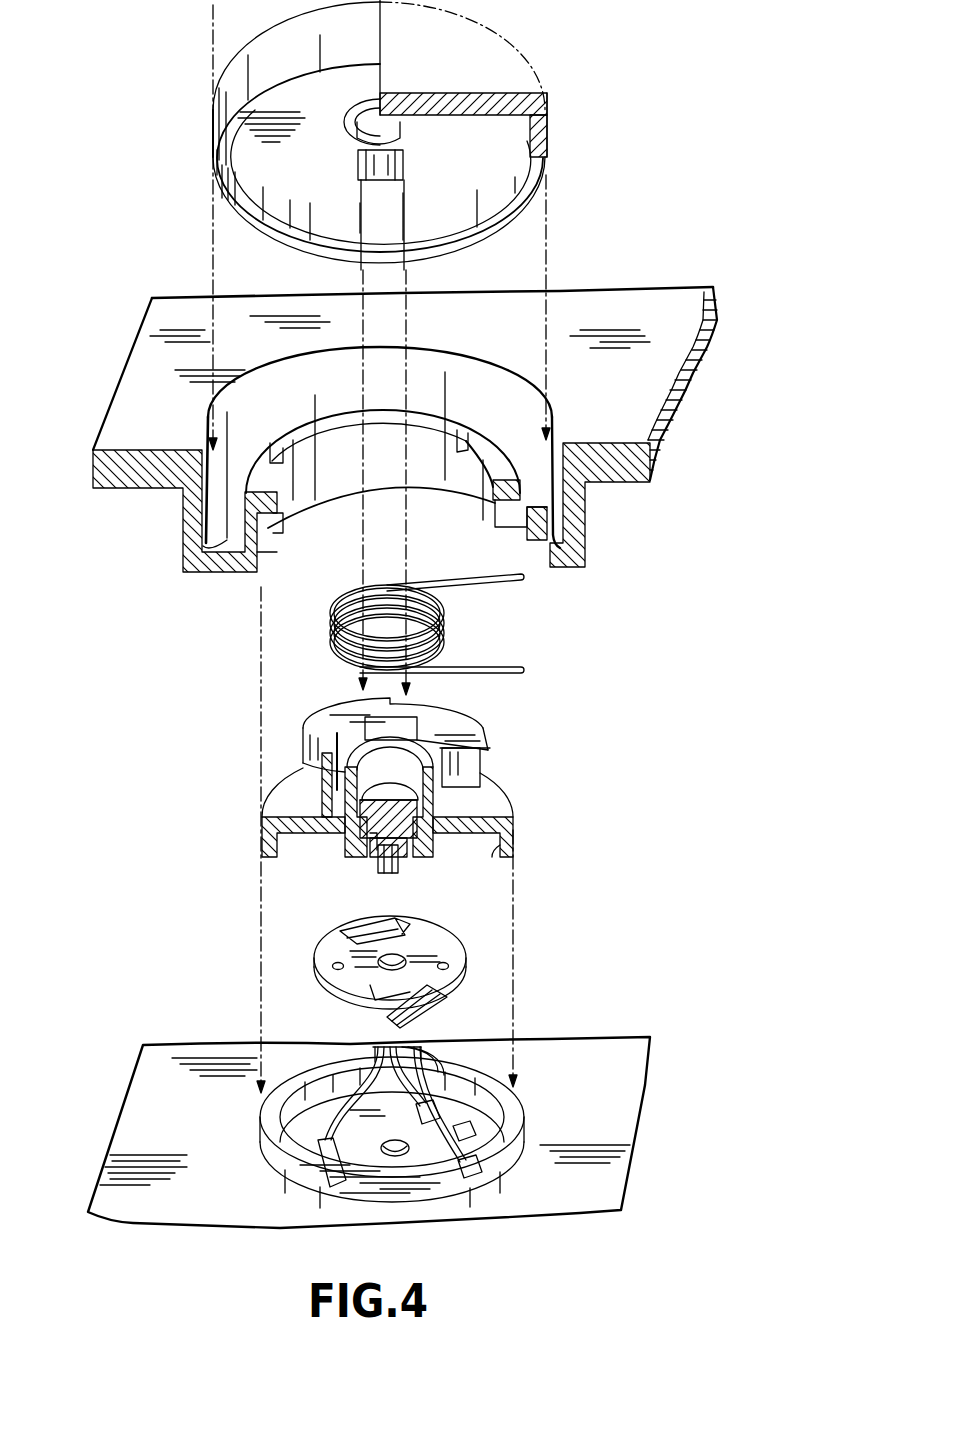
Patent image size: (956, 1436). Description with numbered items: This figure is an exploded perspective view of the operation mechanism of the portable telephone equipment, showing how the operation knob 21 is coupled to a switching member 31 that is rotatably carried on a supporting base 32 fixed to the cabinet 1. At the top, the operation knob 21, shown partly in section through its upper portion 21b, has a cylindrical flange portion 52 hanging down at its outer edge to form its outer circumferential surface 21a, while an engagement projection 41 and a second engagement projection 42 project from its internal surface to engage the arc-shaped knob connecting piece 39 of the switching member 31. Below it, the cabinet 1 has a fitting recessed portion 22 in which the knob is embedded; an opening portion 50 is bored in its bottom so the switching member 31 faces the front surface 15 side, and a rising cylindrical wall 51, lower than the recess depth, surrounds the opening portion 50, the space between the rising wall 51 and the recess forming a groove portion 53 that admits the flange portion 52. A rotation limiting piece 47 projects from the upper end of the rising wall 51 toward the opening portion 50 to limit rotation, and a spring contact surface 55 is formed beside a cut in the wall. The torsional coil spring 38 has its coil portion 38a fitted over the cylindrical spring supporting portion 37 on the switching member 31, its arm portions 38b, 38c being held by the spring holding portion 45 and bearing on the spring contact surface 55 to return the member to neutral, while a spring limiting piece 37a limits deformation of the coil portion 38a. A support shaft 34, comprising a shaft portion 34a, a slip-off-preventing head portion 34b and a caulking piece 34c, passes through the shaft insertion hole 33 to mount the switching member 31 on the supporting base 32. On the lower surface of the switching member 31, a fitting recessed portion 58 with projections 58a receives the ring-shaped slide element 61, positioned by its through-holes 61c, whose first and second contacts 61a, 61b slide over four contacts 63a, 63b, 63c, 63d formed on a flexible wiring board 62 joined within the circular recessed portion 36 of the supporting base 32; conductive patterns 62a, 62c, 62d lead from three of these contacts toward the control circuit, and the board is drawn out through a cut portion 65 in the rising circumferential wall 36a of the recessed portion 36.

The cabinet 1 is at (391, 417).
The front surface 15 is at (389, 453).
The operation knob 21 is at (379, 135).
The outer circumferential surface 21a is at (547, 140).
The cap top plate 21b is at (490, 92).
The fitting recessed portion 22 is at (326, 472).
The engagement projection 41 is at (405, 160).
The rotation limiting piece 47 is at (272, 463).
The opening portion 50 is at (270, 537).
The rising cylindrical wall 51 is at (323, 436).
The cylindrical flange portion 52 is at (213, 165).
The groove portion 53 is at (465, 448).
The spring contact surface 55 is at (512, 535).
The switching member 31 is at (383, 781).
The shaft insertion hole 33 is at (350, 840).
The support shaft 34 is at (392, 859).
The shaft portion 34a is at (372, 842).
The head portion 34b is at (387, 793).
The caulking piece 34c is at (390, 868).
The spring supporting portion 37 is at (488, 803).
The spring limiting piece 37a is at (320, 790).
The torsional coil spring 38 is at (434, 589).
The coil portion 38a is at (350, 596).
The arm portion 38b is at (493, 580).
The arm portion 38c is at (500, 665).
The knob connecting piece 39 is at (323, 712).
The engagement projection 42 is at (435, 715).
The spring holding portion 45 is at (490, 750).
The fitting recessed portion 58 is at (419, 866).
The projection 58a is at (493, 855).
The slide element 61 is at (391, 969).
The first contact 61a is at (340, 931).
The second contact 61b is at (440, 1002).
The through-hole 61c is at (332, 966).
The supporting base 32 is at (352, 1125).
The recessed portion 36 is at (280, 1143).
The rising circumferential wall 36a is at (320, 1055).
The flexible wiring board 62 is at (386, 1125).
The conductive pattern 62a is at (470, 1163).
The conductive pattern 62c is at (442, 1062).
The conductive pattern 62d is at (322, 1125).
The first contact 63a is at (482, 1170).
The second contact 63b is at (476, 1132).
The contact 63c is at (440, 1113).
The fourth contact 63d is at (318, 1165).
The cut portion 65 is at (375, 1048).